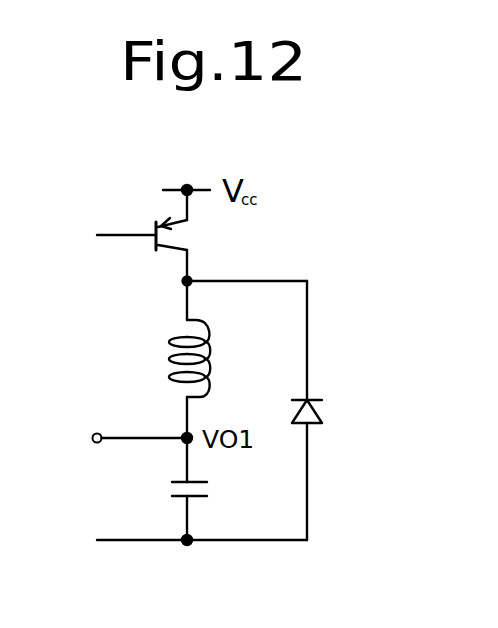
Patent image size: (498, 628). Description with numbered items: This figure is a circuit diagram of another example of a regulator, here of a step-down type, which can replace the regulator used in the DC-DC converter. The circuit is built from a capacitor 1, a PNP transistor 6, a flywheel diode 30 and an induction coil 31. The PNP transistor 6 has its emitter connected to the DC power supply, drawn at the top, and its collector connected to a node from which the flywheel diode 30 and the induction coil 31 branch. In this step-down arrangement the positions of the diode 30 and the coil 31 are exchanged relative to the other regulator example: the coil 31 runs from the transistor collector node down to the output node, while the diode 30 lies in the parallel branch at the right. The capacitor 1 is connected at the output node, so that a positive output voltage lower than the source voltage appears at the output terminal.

The PNP transistor 6 is at (166, 248).
The induction coil 31 is at (208, 328).
The capacitor 1 is at (203, 481).
The flywheel diode 30 is at (320, 418).